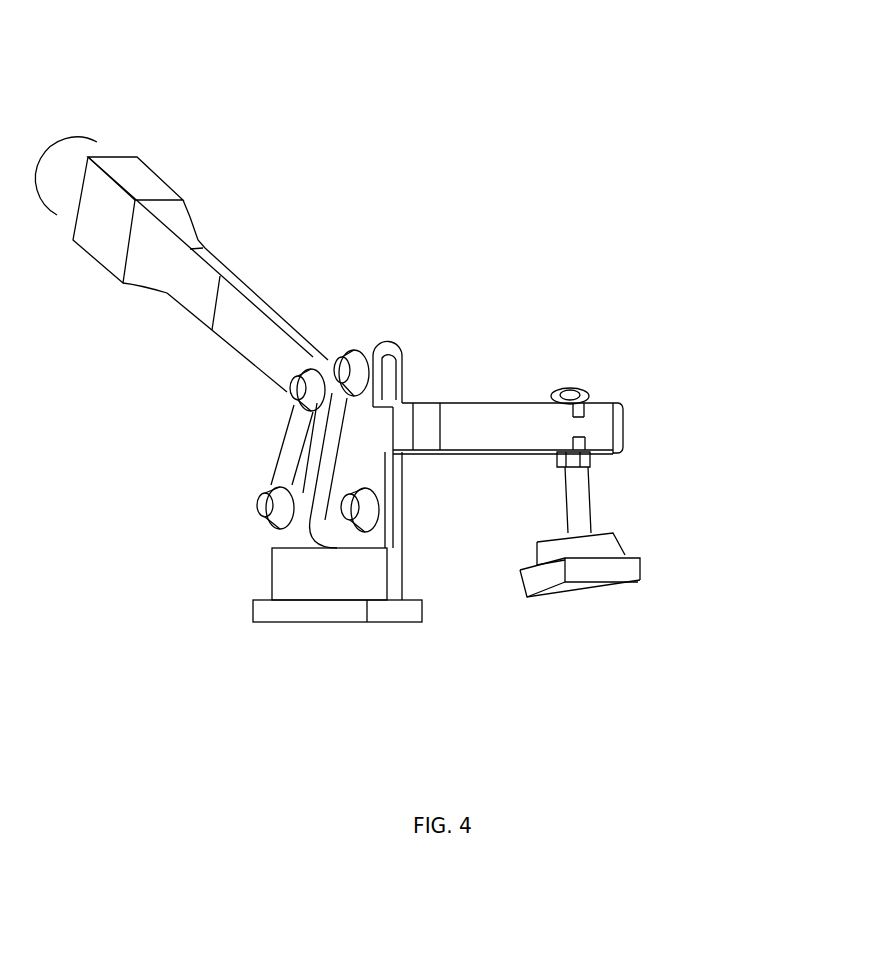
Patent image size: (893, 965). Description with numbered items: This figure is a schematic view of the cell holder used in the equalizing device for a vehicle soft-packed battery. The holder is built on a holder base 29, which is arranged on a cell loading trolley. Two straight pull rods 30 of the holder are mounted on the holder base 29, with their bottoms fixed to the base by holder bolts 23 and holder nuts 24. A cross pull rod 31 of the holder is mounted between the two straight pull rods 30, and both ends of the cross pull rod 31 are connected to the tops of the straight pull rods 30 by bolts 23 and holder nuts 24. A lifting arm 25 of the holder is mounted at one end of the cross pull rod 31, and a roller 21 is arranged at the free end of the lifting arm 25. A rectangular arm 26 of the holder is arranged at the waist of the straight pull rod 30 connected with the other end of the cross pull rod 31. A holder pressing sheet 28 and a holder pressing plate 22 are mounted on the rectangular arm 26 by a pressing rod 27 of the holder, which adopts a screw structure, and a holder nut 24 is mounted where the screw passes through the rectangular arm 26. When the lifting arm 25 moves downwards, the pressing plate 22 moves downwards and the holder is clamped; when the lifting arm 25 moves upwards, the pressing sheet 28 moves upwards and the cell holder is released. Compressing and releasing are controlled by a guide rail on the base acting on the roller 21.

The roller 21 is at (70, 163).
The holder pressing plate 22 is at (630, 572).
The holder bolt 23 is at (367, 335).
The holder nut 24 is at (487, 55).
The lifting arm of the holder 25 is at (252, 313).
The rectangular arm of the holder 26 is at (463, 420).
The pressing rod of the holder 27 is at (577, 482).
The holder pressing sheet 28 is at (603, 543).
The holder base 29 is at (353, 578).
The straight pull rod of the holder 30 is at (293, 463).
The cross pull rod of the holder 31 is at (360, 340).